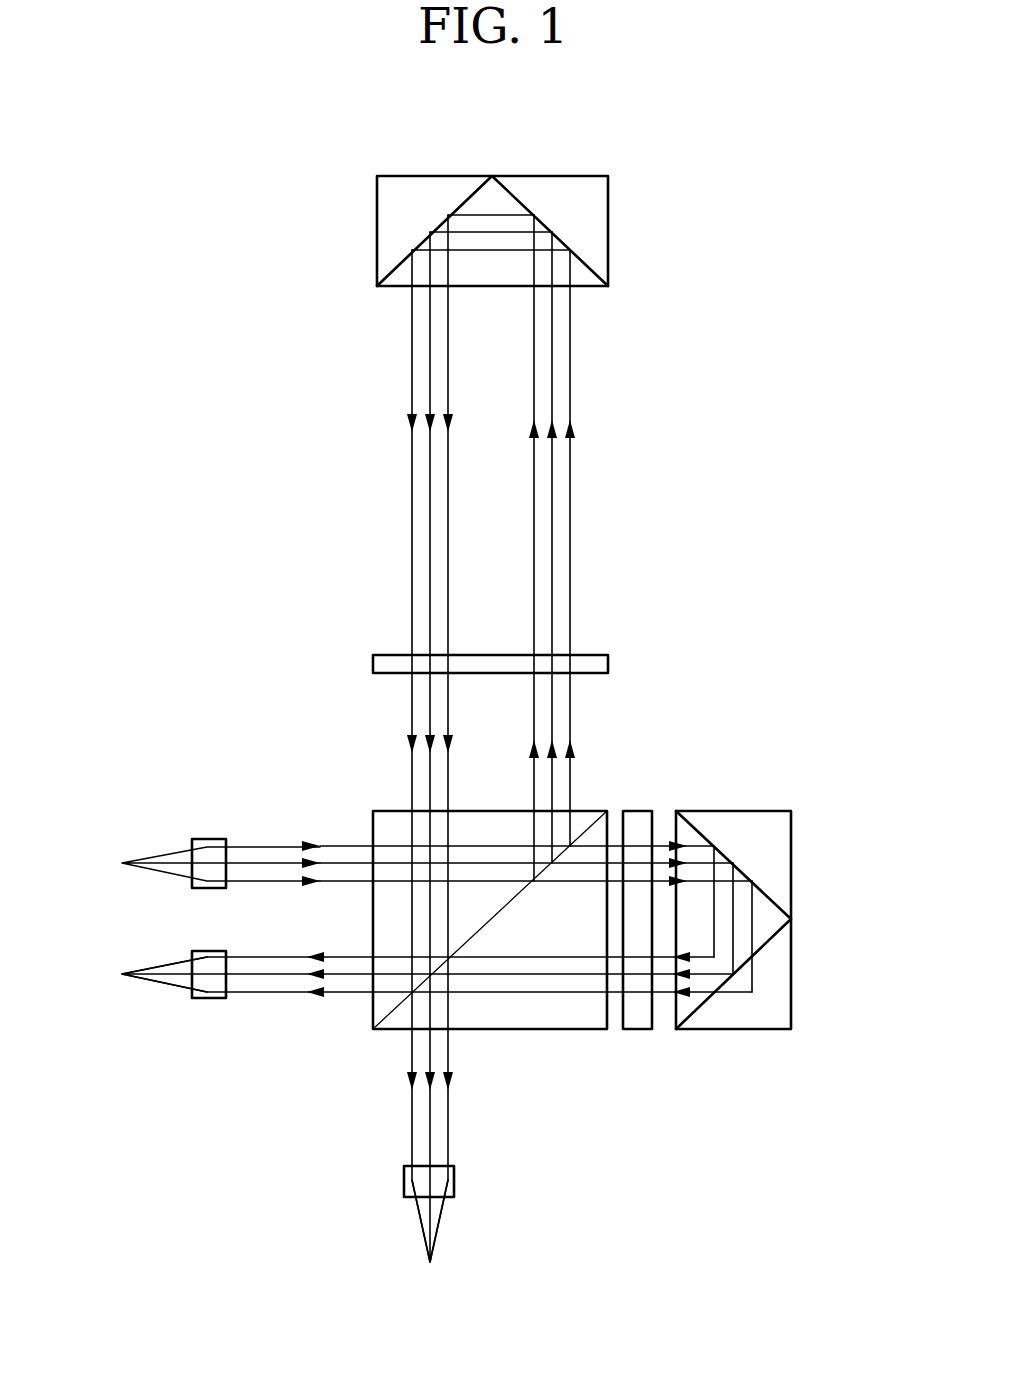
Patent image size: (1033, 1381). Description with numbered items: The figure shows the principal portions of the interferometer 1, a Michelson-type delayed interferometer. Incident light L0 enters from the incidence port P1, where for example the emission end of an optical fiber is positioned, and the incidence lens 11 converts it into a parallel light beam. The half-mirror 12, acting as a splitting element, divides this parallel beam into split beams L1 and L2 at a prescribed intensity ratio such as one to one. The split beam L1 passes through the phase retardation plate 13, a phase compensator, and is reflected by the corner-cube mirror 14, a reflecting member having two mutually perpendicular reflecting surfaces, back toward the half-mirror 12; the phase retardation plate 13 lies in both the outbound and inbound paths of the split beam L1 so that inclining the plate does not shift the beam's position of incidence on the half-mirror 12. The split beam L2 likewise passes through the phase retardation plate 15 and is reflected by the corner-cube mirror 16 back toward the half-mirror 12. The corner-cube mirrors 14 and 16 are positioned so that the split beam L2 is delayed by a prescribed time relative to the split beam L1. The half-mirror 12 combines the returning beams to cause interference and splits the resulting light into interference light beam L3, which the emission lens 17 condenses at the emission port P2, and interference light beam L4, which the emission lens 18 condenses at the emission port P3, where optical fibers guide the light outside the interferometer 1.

The interferometer 1 is at (750, 500).
The incidence lens 11 is at (212, 839).
The half-mirror 12 is at (554, 1017).
The phase retardation plate 13 is at (638, 1017).
The corner-cube mirror 14 is at (754, 1017).
The phase retardation plate 15 is at (588, 655).
The corner-cube mirror 16 is at (598, 230).
The emission lens 17 is at (208, 998).
The emission lens 18 is at (454, 1182).
The incident light L0 is at (180, 857).
The split beam L1 is at (725, 922).
The split beam L2 is at (557, 718).
The interference light beam L3 is at (272, 985).
The interference light beam L4 is at (435, 1122).
The incidence port P1 is at (116, 851).
The emission port P2 is at (116, 959).
The emission port P3 is at (452, 1258).